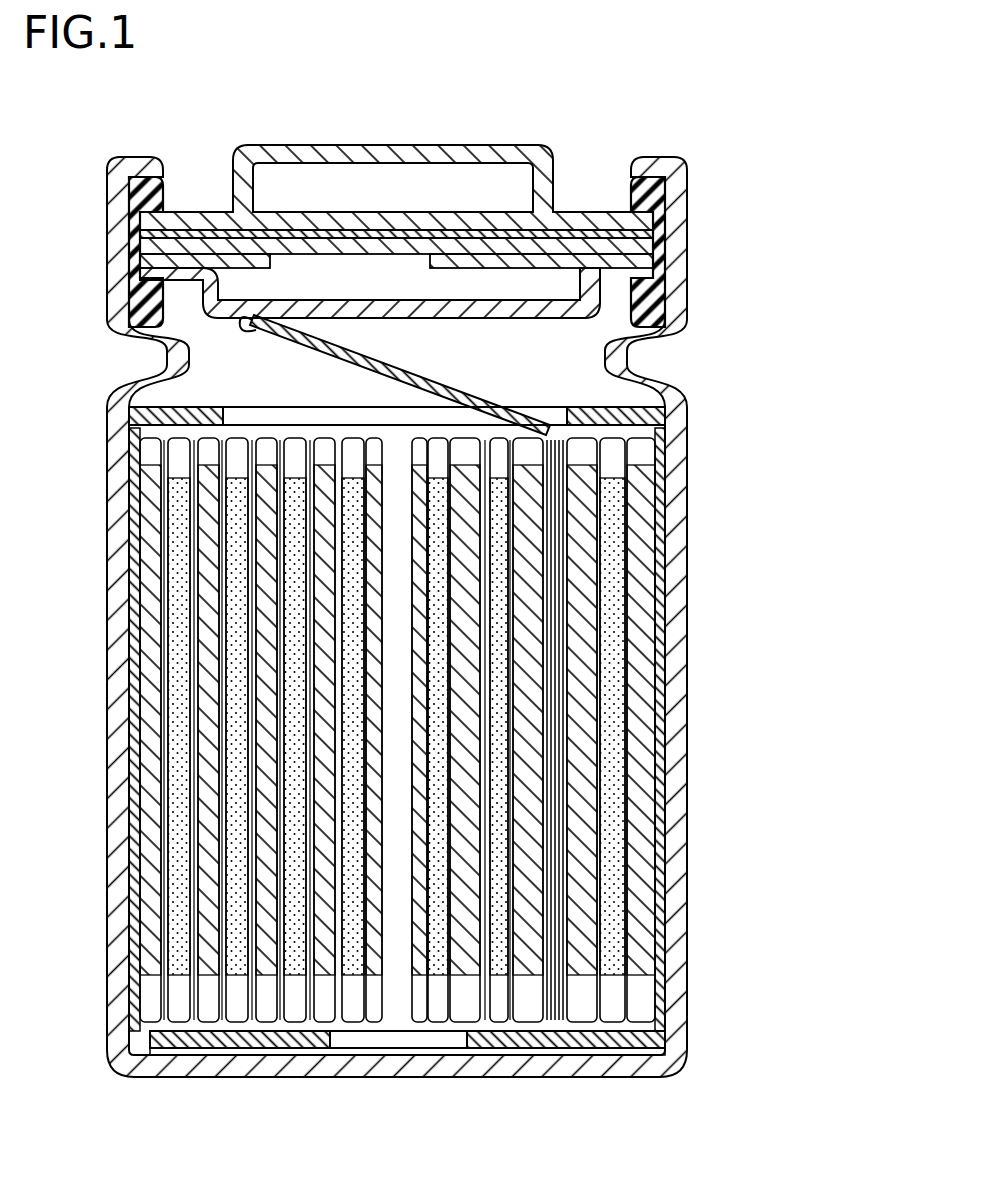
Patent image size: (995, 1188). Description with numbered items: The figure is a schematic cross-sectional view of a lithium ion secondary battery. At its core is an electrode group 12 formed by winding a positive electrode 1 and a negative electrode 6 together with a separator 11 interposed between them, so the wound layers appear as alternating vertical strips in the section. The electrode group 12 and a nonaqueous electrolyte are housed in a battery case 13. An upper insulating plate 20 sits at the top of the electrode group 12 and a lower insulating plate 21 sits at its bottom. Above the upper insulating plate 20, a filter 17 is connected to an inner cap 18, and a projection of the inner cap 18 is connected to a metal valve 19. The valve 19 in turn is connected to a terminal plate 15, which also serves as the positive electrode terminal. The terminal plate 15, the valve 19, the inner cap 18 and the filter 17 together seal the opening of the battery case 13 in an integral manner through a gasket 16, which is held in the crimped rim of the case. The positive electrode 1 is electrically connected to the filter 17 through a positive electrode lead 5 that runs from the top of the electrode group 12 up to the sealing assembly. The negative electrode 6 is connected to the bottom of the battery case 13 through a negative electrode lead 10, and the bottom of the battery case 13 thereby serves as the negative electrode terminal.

The positive electrode 1 is at (614, 827).
The positive electrode lead 5 is at (437, 403).
The negative electrode 6 is at (728, 758).
The negative electrode lead 10 is at (453, 1050).
The separator 11 is at (782, 865).
The electrode group 12 is at (489, 729).
The battery case 13 is at (120, 594).
The terminal plate 15 is at (314, 147).
The gasket 16 is at (655, 237).
The filter 17 is at (398, 300).
The inner cap 18 is at (438, 214).
The valve 19 is at (435, 230).
The upper insulating plate 20 is at (662, 410).
The lower insulating plate 21 is at (668, 1046).